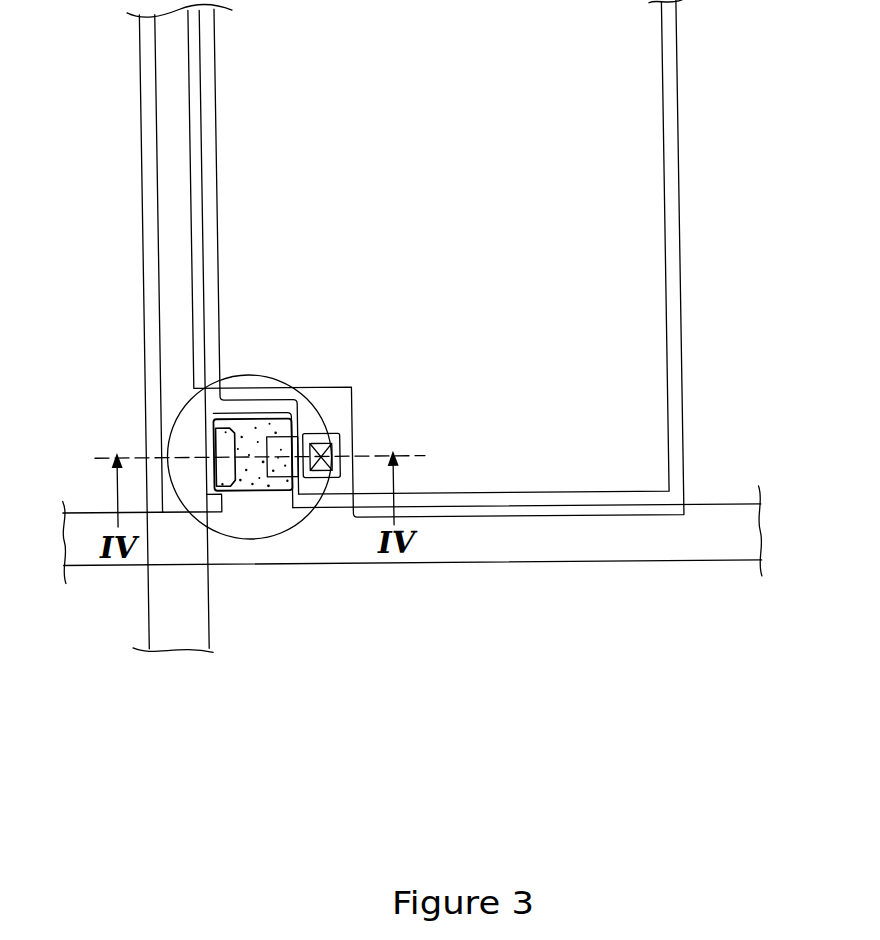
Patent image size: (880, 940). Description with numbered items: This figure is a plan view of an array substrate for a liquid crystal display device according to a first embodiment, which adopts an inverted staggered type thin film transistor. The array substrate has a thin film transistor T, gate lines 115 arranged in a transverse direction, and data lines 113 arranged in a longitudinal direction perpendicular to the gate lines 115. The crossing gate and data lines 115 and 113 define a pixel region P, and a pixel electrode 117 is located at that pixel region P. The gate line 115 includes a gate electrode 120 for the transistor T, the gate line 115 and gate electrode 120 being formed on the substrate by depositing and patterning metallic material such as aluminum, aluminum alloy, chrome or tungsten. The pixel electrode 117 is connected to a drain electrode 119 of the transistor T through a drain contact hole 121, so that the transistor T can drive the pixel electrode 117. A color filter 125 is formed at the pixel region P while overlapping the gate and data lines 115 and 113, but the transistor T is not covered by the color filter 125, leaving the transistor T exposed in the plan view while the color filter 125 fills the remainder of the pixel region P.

The data line 113 is at (133, 182).
The gate line 115 is at (501, 578).
The pixel electrode 117 is at (670, 111).
The drain electrode 119 is at (326, 479).
The gate electrode 120 is at (262, 400).
The drain contact hole 121 is at (324, 434).
The color filter 125 is at (686, 344).
The pixel region P is at (748, 208).
The thin film transistor T is at (246, 539).